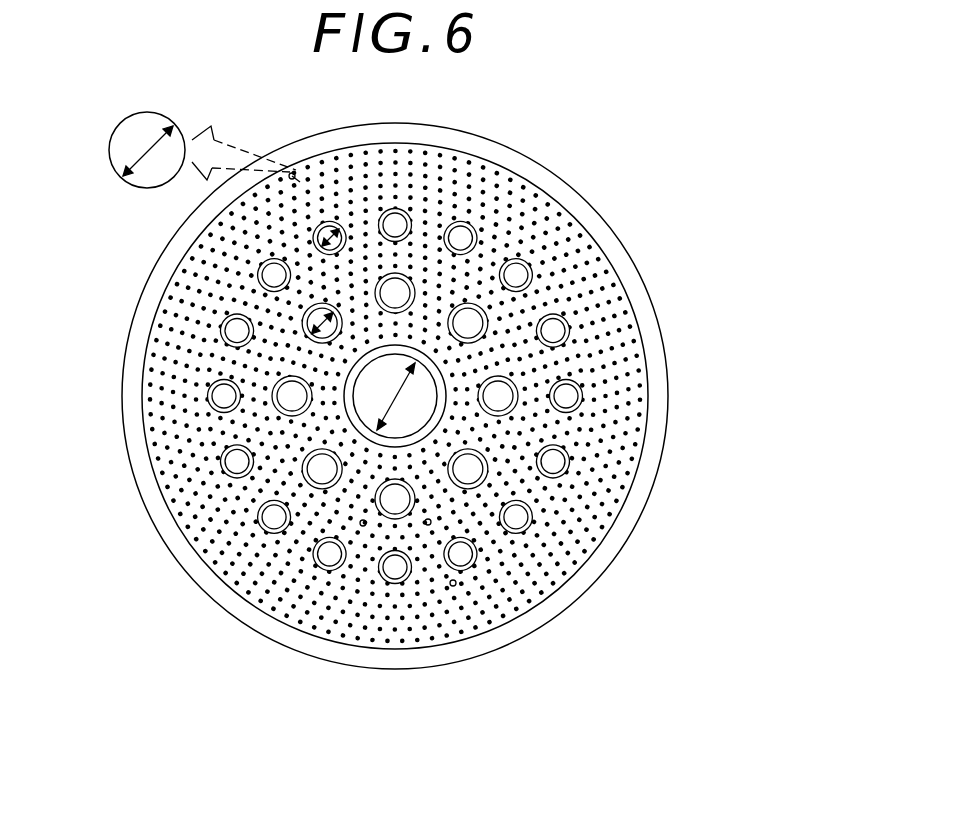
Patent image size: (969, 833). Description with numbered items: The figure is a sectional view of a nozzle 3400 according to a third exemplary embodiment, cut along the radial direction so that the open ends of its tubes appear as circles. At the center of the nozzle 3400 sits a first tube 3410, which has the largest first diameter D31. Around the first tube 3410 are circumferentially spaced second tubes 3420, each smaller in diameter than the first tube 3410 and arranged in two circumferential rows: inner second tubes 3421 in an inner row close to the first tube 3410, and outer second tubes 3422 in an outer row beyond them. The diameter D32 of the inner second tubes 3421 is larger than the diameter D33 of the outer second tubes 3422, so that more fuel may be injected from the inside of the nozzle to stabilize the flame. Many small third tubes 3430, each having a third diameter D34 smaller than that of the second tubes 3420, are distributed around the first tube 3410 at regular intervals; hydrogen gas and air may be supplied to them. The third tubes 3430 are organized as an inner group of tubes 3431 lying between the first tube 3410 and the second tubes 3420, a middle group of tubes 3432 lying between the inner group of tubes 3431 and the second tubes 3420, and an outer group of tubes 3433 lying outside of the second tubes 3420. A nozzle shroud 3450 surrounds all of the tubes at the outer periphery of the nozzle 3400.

The nozzle 3400 is at (422, 445).
The first tube 3410 is at (445, 382).
The second tubes 3420 is at (513, 396).
The inner second tubes 3421 is at (470, 303).
The outer second tubes 3422 is at (518, 260).
The third tubes 3430 is at (395, 469).
The inner group of tubes 3431 is at (363, 526).
The middle group of tubes 3432 is at (428, 525).
The outer group of tubes 3433 is at (453, 586).
The nozzle shroud 3450 is at (650, 440).
The first diameter D31 is at (393, 392).
The diameter of the inner second tubes D32 is at (303, 318).
The diameter of the outer second tubes D33 is at (314, 233).
The third diameter D34 is at (110, 149).